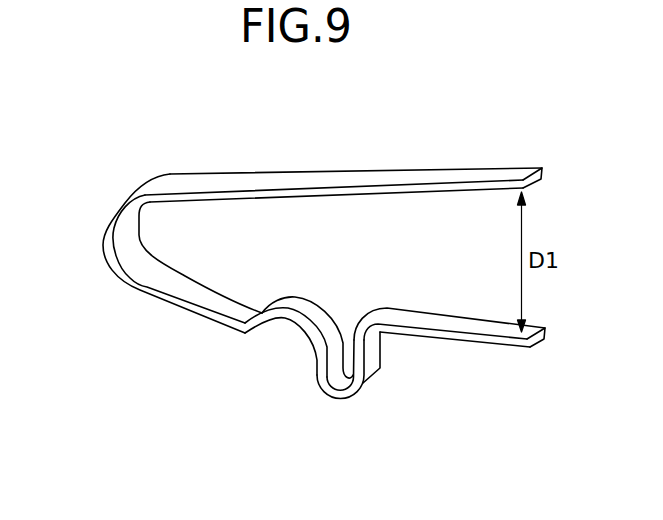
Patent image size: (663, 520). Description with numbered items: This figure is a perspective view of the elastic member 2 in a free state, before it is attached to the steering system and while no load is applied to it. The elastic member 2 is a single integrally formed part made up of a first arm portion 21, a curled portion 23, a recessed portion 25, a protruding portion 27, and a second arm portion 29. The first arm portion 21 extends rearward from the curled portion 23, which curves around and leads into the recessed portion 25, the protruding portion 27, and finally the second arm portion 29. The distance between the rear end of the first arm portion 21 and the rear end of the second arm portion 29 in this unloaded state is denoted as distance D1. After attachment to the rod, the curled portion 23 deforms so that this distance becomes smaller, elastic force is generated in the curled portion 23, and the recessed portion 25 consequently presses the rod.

The elastic member 2 is at (496, 131).
The first arm portion 21 is at (393, 172).
The curled portion 23 is at (102, 247).
The recessed portion 25 is at (309, 306).
The protruding portion 27 is at (334, 401).
The second arm portion 29 is at (459, 318).